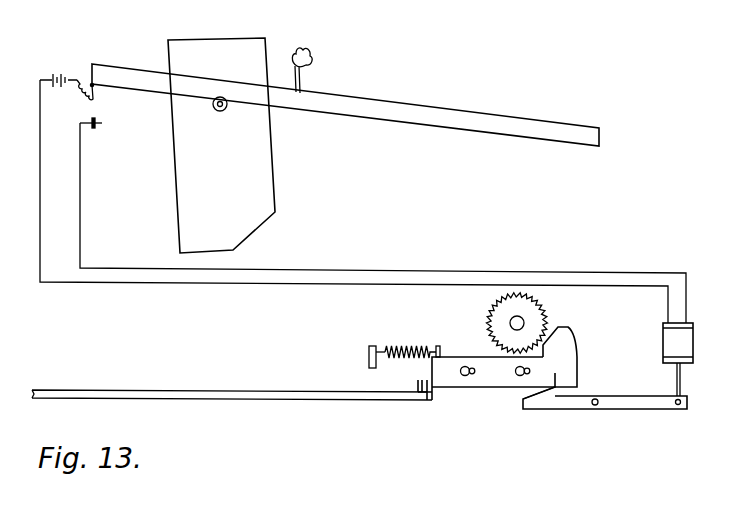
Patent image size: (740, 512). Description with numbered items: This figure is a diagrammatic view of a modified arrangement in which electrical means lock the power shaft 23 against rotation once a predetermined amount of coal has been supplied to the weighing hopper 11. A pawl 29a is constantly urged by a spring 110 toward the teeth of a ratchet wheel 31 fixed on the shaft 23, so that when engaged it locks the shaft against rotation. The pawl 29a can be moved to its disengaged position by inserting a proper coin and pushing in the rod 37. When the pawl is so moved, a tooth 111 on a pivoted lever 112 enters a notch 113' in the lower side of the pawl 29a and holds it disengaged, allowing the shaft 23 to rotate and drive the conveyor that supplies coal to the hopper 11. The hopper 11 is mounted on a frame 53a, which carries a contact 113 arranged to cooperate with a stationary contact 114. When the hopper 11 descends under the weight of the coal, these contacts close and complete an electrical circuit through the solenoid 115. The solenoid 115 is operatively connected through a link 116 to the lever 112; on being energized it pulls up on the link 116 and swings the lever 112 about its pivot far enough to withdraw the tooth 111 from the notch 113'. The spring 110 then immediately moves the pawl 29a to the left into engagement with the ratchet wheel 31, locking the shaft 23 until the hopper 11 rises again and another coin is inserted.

The hopper 11 is at (258, 147).
The shaft 23 is at (523, 322).
The pawl 29a is at (487, 382).
The ratchet wheel 31 is at (503, 311).
The rod 37 is at (333, 400).
The frame 53a is at (388, 118).
The spring 110 is at (404, 348).
The tooth 111 is at (547, 395).
The pivoted lever 112 is at (627, 410).
The contact 113 is at (108, 94).
The notch 113' is at (581, 362).
The stationary contact 114 is at (111, 124).
The solenoid 115 is at (686, 343).
The link 116 is at (683, 378).